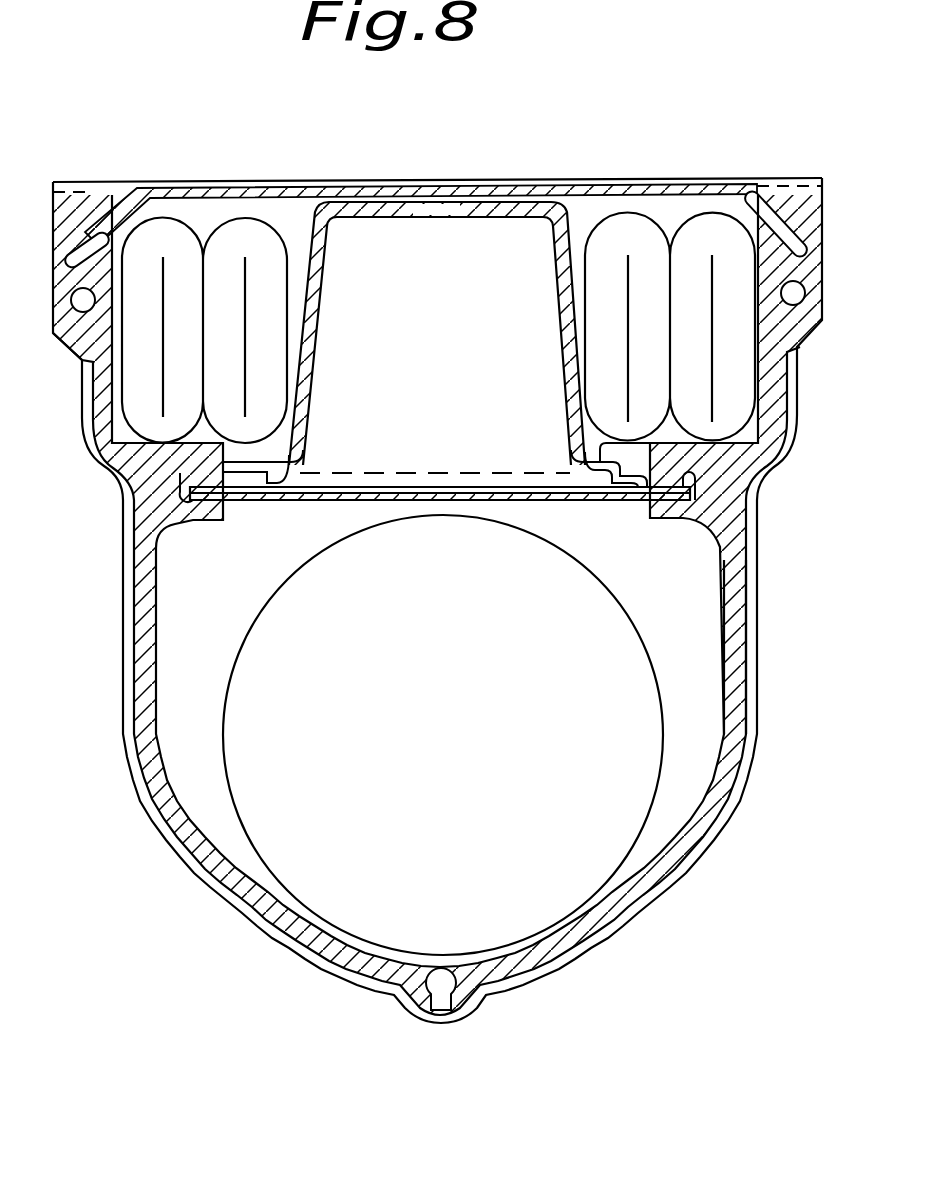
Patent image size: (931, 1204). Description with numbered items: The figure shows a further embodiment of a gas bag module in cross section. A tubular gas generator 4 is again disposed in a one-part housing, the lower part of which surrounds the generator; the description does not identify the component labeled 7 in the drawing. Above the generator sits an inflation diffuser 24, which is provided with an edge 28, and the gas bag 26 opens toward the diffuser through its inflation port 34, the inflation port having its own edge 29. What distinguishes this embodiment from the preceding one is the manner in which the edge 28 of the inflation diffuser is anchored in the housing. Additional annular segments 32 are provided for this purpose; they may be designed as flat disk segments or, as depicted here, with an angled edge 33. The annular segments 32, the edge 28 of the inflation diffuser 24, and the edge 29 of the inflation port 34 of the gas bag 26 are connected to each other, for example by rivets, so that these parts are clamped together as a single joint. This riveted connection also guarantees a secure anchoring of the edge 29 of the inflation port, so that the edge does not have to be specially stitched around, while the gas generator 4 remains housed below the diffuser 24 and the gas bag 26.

The tubular gas generator 4 is at (632, 717).
The housing 7 is at (745, 472).
The inflation diffuser 24 is at (516, 205).
The gas bag 26 is at (713, 232).
The edge of the inflation diffuser 28 is at (300, 487).
The edge of the inflation port 29 is at (255, 497).
The annular segments 32 is at (732, 538).
The angled edge 33 is at (195, 479).
The inflation port 34 is at (333, 497).